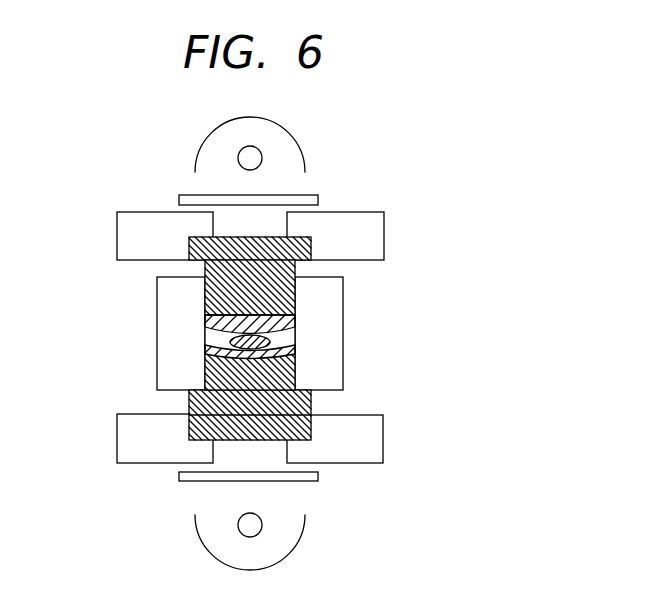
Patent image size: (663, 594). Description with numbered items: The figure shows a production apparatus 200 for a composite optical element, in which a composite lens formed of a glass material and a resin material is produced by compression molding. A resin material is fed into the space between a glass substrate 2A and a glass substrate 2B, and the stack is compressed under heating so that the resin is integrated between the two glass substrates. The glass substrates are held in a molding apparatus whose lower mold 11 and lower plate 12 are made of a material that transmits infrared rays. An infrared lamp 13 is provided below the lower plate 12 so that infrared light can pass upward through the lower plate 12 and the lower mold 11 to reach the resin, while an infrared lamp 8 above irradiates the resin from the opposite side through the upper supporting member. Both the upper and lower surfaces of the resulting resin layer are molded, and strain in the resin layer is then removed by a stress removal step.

The production apparatus 200 is at (403, 150).
The infrared lamp 8 is at (250, 158).
The infrared lamp 13 is at (252, 525).
The lower mold 11 is at (205, 372).
The lower plate 12 is at (190, 436).
The glass substrate 2A is at (283, 322).
The glass substrate 2B is at (285, 344).